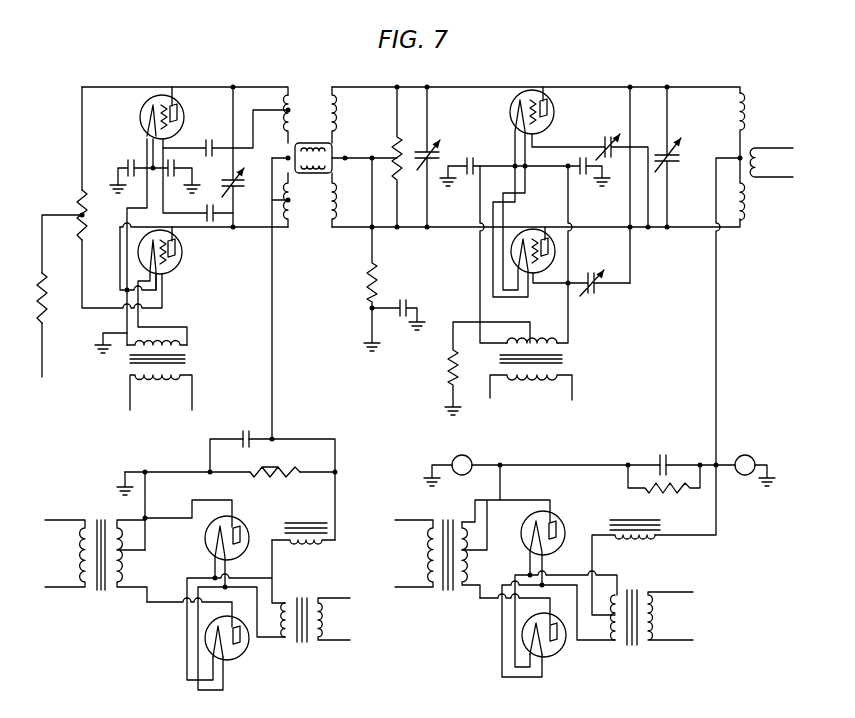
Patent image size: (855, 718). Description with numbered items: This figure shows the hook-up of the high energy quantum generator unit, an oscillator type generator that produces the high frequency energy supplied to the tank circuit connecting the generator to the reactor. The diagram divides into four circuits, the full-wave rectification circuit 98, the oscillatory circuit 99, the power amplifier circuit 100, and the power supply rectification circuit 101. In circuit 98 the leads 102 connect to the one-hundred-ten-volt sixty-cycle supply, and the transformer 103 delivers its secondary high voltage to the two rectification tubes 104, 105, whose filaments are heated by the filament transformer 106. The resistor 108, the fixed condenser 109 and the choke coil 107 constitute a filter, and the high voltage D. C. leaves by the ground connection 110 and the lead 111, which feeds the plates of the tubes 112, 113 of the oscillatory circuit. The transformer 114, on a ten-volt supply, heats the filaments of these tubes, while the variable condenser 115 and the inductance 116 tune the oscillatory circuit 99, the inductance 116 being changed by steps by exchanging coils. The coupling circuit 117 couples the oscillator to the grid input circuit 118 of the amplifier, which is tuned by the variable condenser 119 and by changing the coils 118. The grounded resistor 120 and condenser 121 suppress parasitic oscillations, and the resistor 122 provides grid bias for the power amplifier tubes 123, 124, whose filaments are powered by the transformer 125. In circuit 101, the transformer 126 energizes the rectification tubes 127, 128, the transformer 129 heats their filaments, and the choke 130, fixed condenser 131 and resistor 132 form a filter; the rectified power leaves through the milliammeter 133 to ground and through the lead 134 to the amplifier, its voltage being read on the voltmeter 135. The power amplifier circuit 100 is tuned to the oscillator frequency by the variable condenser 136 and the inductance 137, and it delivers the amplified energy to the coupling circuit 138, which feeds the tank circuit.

The full-wave rectification circuit 98 is at (165, 590).
The oscillatory circuit 99 is at (202, 87).
The power amplifier circuit 100 is at (597, 79).
The power supply rectification circuit 101 is at (578, 458).
The leads 102 is at (47, 585).
The transformer 103 is at (100, 590).
The rectification tube 104 is at (258, 511).
The rectification tube 105 is at (235, 663).
The filament transformer 106 is at (297, 645).
The choke coil 107 is at (302, 547).
The resistor 108 is at (278, 458).
The fixed condenser 109 is at (243, 437).
The ground connection 110 is at (113, 488).
The lead 111 is at (273, 357).
The oscillator tube 112 is at (140, 105).
The oscillator tube 113 is at (178, 264).
The transformer 114 is at (187, 367).
The variable condenser 115 is at (245, 170).
The inductance 116 is at (296, 95).
The coupling circuit 117 is at (315, 176).
The grid input circuit 118 is at (343, 102).
The variable condenser 119 is at (443, 150).
The resistor 120 is at (367, 278).
The condenser 121 is at (420, 279).
The resistor 122 is at (397, 142).
The power amplifier tube 123 is at (511, 112).
The power amplifier tube 124 is at (517, 221).
The transformer 125 is at (560, 355).
The transformer 126 is at (440, 590).
The rectification tube 127 is at (556, 520).
The rectification tube 128 is at (560, 655).
The transformer 129 is at (630, 592).
The choke 130 is at (625, 538).
The fixed condenser 131 is at (672, 447).
The resistor 132 is at (655, 490).
The milliammeter 133 is at (467, 457).
The lead 134 is at (716, 375).
The voltmeter 135 is at (745, 456).
The variable condenser 136 is at (680, 148).
The inductance 137 is at (750, 112).
The coupling circuit 138 is at (764, 160).